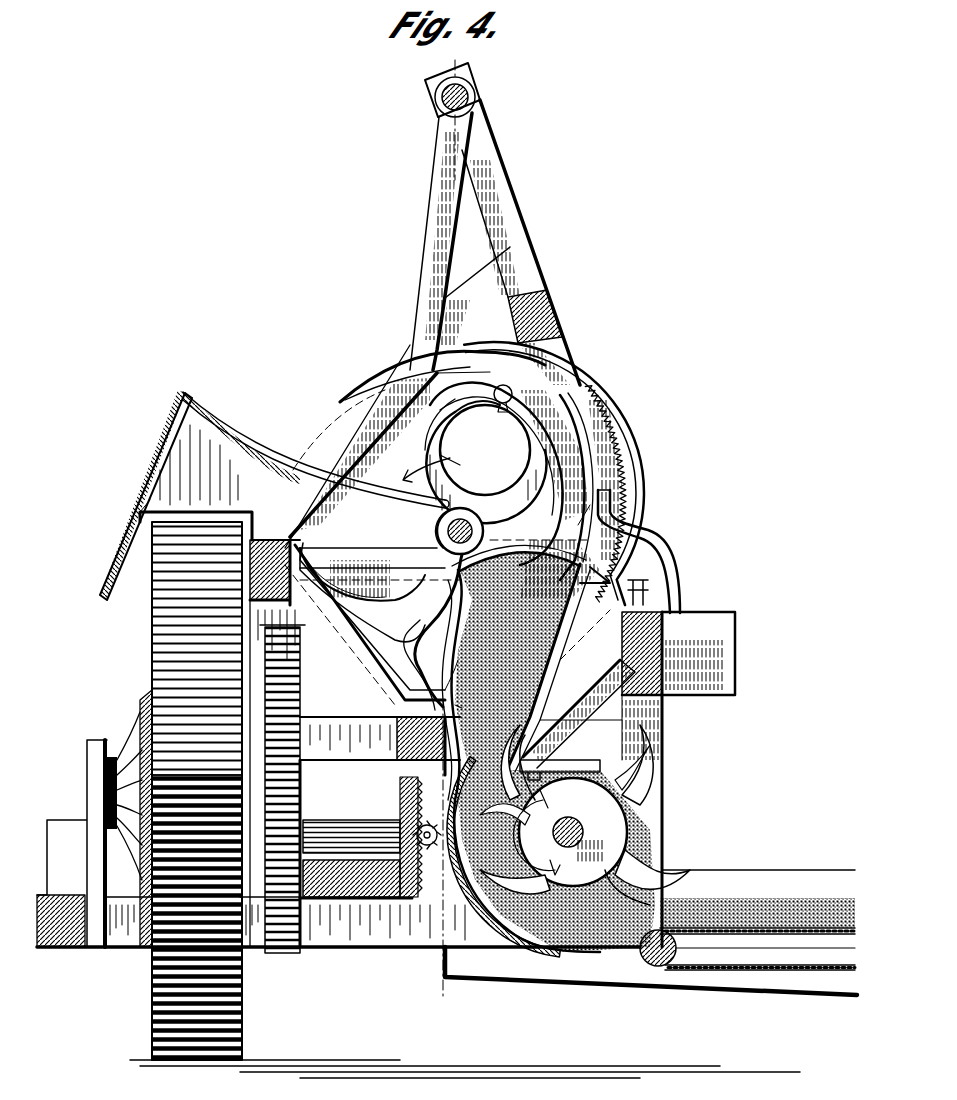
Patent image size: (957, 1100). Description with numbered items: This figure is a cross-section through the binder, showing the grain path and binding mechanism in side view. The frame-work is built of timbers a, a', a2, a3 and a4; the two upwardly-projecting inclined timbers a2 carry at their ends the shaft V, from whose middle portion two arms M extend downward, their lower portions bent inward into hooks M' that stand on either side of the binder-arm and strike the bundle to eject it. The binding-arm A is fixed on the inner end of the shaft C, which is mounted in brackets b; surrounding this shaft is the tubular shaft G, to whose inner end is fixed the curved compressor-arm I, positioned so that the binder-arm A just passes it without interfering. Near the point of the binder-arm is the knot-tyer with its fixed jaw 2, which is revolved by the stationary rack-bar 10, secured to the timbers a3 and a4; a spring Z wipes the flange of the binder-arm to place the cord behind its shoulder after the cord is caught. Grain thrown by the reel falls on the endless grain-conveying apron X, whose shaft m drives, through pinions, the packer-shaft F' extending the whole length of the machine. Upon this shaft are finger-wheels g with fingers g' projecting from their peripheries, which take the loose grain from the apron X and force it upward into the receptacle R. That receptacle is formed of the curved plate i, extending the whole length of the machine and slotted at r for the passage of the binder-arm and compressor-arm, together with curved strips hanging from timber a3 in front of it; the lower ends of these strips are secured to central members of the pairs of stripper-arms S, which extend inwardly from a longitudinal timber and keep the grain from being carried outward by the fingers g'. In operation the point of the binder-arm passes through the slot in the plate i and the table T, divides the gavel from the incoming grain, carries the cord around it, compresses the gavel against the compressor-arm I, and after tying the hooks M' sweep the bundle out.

The shaft V is at (468, 92).
The arms M is at (430, 241).
The upwardly-projecting inclined timbers a2 is at (510, 242).
The timber a3 is at (553, 318).
The table T is at (274, 725).
The timber a' is at (344, 483).
The compressor-arm I is at (387, 446).
The hooks M' is at (485, 461).
The fixed jaw 2 is at (507, 398).
The binding-arm A is at (470, 475).
The timber a is at (581, 517).
The stationary rack-bar 10 is at (625, 495).
The spring Z is at (641, 551).
The shaft C is at (463, 519).
The tubular shaft G is at (436, 528).
The brackets b is at (400, 578).
The receptacle R is at (460, 640).
The slot r is at (470, 684).
The curved plate i is at (466, 700).
The timber a4 is at (678, 653).
The stripper-arms S is at (595, 672).
The finger-wheels g is at (585, 815).
The fingers g' is at (603, 790).
The packer-shaft F' is at (580, 829).
The endless grain-conveying apron X is at (764, 930).
The shaft m is at (670, 948).